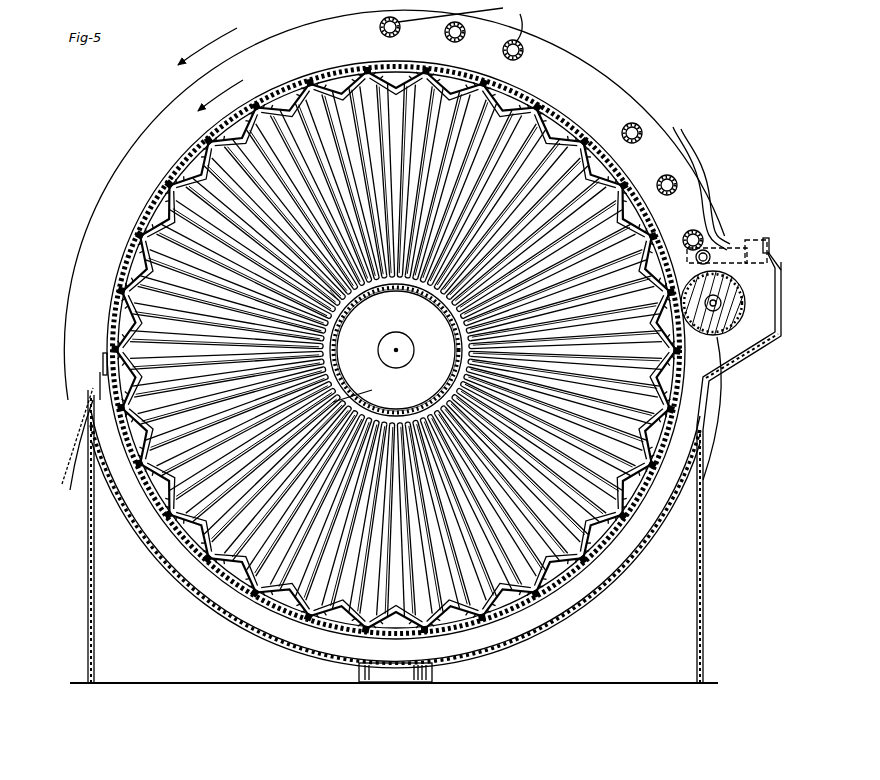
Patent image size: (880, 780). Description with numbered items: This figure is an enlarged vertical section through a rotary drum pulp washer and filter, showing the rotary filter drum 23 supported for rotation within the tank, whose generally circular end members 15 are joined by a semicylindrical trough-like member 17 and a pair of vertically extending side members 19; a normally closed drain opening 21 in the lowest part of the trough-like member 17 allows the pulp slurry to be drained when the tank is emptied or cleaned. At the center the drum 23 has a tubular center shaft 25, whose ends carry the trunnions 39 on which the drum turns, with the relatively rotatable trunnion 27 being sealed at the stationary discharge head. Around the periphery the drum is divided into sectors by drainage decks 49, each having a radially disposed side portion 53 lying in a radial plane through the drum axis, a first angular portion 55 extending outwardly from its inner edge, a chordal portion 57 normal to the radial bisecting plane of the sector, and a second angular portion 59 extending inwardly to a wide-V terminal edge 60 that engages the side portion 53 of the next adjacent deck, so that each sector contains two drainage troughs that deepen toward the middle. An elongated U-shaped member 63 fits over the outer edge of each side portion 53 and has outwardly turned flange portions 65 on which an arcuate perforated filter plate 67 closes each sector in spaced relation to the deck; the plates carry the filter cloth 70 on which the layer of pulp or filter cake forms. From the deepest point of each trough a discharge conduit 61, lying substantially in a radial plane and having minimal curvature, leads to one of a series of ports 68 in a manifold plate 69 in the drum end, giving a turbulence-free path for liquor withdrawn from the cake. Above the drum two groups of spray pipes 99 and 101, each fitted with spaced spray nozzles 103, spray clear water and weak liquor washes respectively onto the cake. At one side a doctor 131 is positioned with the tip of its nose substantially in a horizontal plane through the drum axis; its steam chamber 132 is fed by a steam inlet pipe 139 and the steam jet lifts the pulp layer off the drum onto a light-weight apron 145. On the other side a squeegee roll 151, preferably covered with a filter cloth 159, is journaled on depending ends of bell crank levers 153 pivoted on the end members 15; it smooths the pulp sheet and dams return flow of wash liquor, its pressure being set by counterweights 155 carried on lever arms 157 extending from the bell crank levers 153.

The end member 15 is at (173, 111).
The trough-like member 17 is at (560, 622).
The side member 19 is at (90, 618).
The drain opening 21 is at (366, 684).
The rotary filter drum 23 is at (356, 48).
The tubular center shaft 25 is at (340, 368).
The trunnion 27 is at (338, 296).
The trunnion 39 is at (407, 346).
The drainage deck 49 is at (158, 458).
The side portion 53 is at (371, 66).
The first angular portion 55 is at (418, 70).
The chordal portion 57 is at (450, 70).
The second angular portion 59 is at (478, 77).
The terminal edge 60 is at (494, 83).
The conduit 61 is at (185, 396).
The U-shaped member 63 is at (292, 87).
The flange portion 65 is at (287, 94).
The perforated filter plate 67 is at (324, 77).
The port 68 is at (361, 391).
The manifold plate 69 is at (378, 282).
The filter cloth 70 is at (160, 187).
The spray pipe 99 is at (462, 21).
The spray pipe 101 is at (640, 128).
The spray nozzle 103 is at (399, 30).
The doctor 131 is at (76, 383).
The steam chamber 132 is at (103, 366).
The steam inlet pipe 139 is at (100, 397).
The apron 145 is at (60, 484).
The squeegee roll 151 is at (720, 332).
The bell crank lever 153 is at (728, 335).
The counterweight 155 is at (766, 237).
The lever arm 157 is at (735, 248).
The filter cloth 159 is at (775, 332).